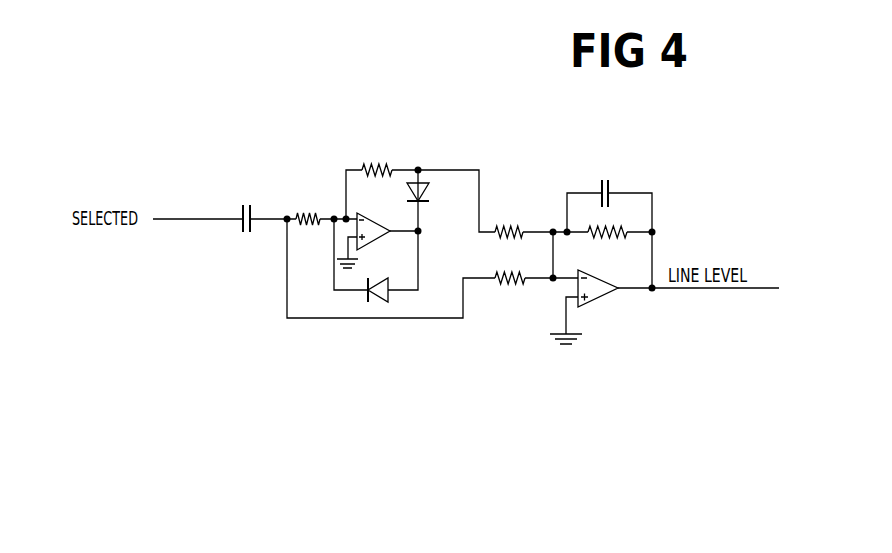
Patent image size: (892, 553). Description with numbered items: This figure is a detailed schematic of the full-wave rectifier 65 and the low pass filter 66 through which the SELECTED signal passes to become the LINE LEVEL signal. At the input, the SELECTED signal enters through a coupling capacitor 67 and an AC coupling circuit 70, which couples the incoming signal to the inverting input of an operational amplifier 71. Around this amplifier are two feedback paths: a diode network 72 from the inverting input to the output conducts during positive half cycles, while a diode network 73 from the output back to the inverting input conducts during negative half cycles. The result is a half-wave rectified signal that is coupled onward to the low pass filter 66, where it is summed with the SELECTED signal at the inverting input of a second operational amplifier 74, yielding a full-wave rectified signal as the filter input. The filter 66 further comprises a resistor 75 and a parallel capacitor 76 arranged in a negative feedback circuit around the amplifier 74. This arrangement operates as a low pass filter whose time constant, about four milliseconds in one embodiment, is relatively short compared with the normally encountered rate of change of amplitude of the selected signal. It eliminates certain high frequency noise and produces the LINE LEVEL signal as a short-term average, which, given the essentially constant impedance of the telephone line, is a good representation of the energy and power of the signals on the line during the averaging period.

The full-wave rectifier 65 is at (385, 246).
The low pass filter 66 is at (637, 268).
The coupling capacitor 67 is at (253, 210).
The AC coupling circuit 70 is at (275, 198).
The operational amplifier 71 is at (364, 245).
The diode network 72 is at (402, 159).
The diode network 73 is at (388, 280).
The operational amplifier 74 is at (603, 302).
The resistor 75 is at (608, 244).
The capacitor 76 is at (614, 186).